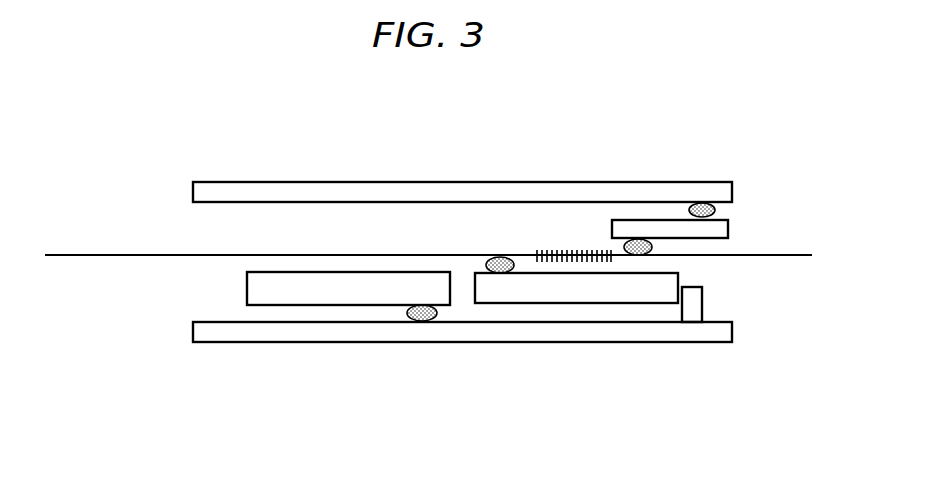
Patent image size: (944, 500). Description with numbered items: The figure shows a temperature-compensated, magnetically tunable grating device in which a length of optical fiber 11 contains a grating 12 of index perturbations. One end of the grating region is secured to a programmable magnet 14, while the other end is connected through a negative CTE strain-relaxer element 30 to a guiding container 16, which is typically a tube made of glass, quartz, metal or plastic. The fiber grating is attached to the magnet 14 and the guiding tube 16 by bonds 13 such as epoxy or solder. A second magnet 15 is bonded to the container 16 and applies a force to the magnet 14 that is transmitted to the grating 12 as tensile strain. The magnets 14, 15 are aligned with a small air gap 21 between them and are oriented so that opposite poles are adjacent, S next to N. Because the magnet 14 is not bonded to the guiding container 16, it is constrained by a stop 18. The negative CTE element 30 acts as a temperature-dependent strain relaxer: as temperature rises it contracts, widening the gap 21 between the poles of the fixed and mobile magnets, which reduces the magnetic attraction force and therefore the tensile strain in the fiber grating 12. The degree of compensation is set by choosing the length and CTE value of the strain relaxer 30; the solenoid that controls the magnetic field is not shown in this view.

The optical fiber 11 is at (97, 256).
The grating 12 is at (565, 250).
The bonds 13 is at (715, 209).
The programmable magnet 14 is at (468, 395).
The second magnet 15 is at (368, 305).
The guiding container 16 is at (226, 178).
The stop 18 is at (702, 311).
The air gap 21 is at (475, 283).
The negative CTE strain-relaxer element 30 is at (651, 220).